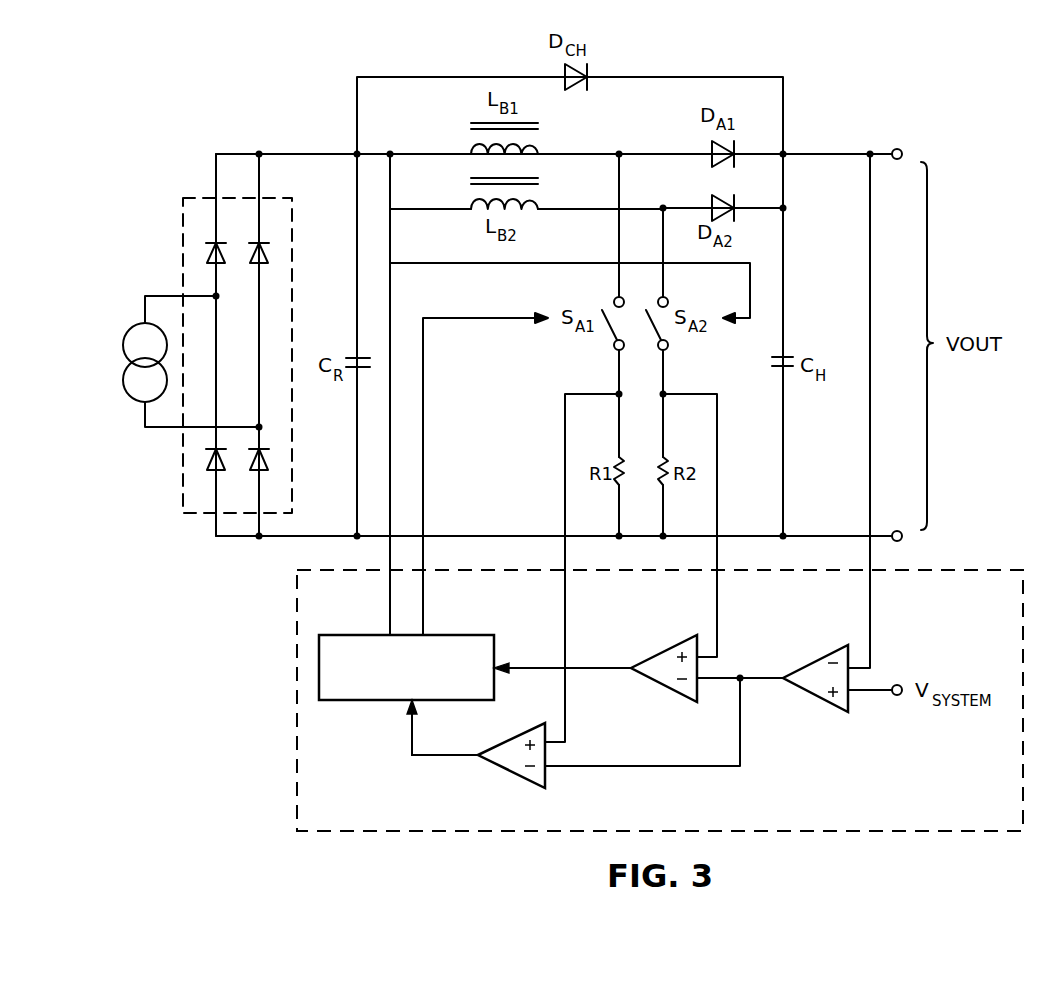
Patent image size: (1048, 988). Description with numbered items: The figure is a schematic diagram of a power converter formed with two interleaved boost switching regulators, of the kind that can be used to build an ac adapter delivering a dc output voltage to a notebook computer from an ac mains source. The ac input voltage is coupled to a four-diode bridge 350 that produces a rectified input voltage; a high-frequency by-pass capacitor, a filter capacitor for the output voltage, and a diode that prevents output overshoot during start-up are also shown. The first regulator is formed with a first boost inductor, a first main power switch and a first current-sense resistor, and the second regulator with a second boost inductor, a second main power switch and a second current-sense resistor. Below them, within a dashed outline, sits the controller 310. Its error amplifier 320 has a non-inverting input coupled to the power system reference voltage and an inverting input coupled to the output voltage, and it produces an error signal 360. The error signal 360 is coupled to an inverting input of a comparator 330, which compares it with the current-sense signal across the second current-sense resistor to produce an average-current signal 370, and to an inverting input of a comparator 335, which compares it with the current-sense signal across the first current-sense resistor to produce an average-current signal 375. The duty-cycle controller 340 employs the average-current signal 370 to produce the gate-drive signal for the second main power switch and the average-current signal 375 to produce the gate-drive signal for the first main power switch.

The controller 310 is at (288, 701).
The error amplifier 320 is at (818, 697).
The comparator 330 is at (664, 687).
The comparator 335 is at (511, 769).
The duty-cycle controller 340 is at (360, 703).
The four-diode bridge 350 is at (181, 224).
The error signal 360 is at (767, 677).
The average-current signal 370 is at (597, 667).
The average-current signal 375 is at (435, 757).